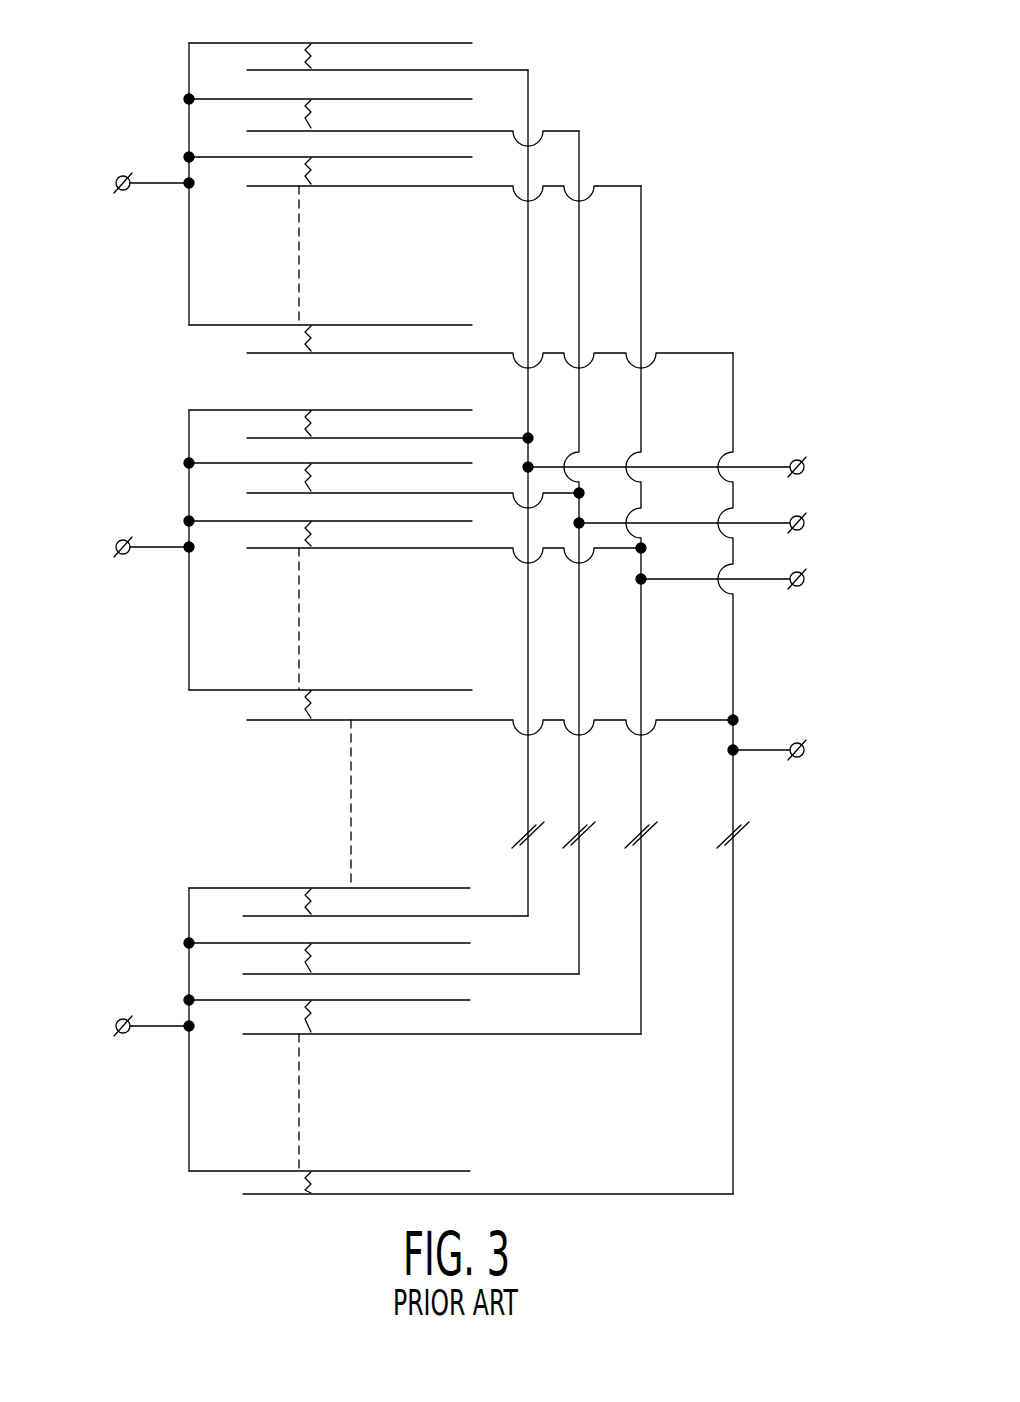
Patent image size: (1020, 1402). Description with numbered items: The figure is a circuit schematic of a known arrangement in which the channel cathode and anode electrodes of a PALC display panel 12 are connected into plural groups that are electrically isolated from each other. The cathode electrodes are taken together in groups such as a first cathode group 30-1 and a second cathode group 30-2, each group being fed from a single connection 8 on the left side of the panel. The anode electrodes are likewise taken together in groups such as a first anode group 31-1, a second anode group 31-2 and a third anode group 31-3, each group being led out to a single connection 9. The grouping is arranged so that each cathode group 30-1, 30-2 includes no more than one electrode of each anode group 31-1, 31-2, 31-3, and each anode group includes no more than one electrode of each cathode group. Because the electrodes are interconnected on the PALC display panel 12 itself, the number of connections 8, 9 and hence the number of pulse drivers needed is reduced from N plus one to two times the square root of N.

The connection 8 is at (130, 192).
The connection 9 is at (792, 460).
The PALC display panel 12 is at (136, 366).
The cathode electrode group 30-1 is at (350, 43).
The cathode electrode group 30-2 is at (265, 408).
The anode electrode group 31-1 is at (490, 70).
The anode electrode group 31-2 is at (498, 133).
The anode electrode group 31-3 is at (616, 187).